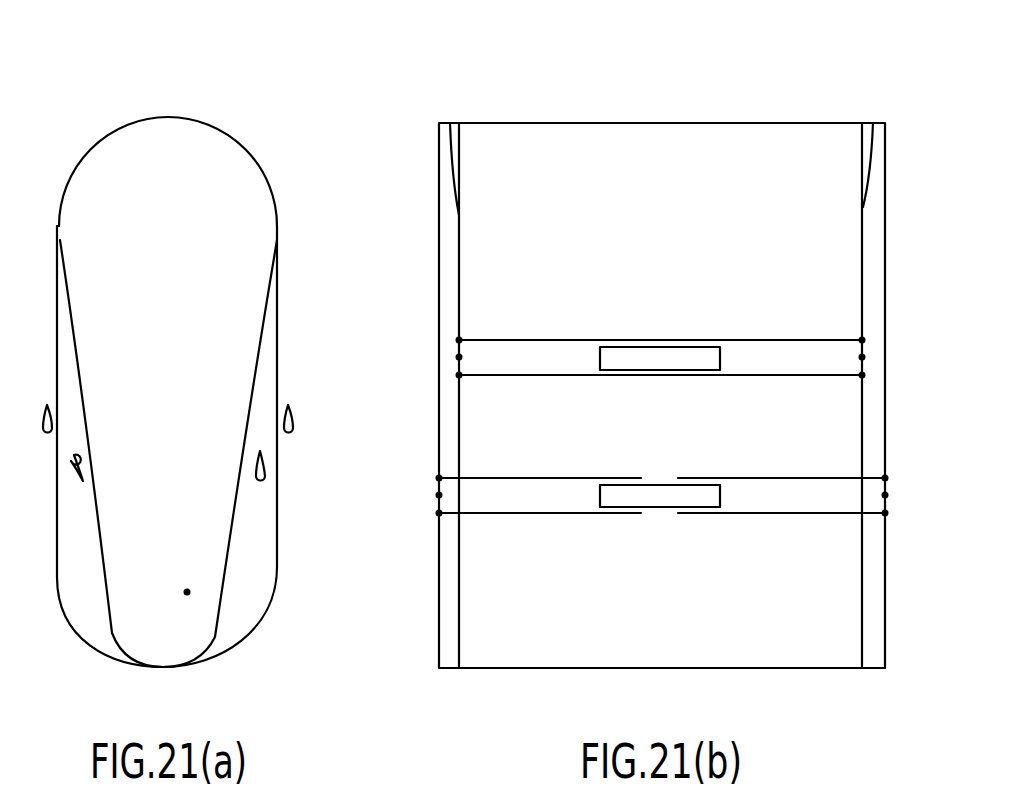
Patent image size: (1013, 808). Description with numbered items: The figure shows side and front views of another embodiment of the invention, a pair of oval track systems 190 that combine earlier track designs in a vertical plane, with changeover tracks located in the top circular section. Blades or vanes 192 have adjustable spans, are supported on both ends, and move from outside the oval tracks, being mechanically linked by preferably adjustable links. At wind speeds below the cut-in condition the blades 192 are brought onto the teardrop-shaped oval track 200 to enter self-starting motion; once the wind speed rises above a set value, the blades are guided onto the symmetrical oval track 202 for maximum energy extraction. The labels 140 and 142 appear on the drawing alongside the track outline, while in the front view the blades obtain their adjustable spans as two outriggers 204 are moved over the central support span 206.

In FIG. 21A, the oval track system 190 is at (271, 147).
In FIG. 21A, the inner wall 142 is at (263, 390).
In FIG. 21A, the blade 192 is at (70, 460).
In FIG. 21B, the blade 192 is at (632, 370).
In FIG. 21B, the teardrop-shaped oval track 200 is at (439, 392).
In FIG. 21A, the outer body 140 is at (57, 580).
In FIG. 21B, the symmetrical oval track 202 is at (459, 422).
In FIG. 21B, the outrigger 204 is at (452, 143).
In FIG. 21B, the central support span 206 is at (490, 375).